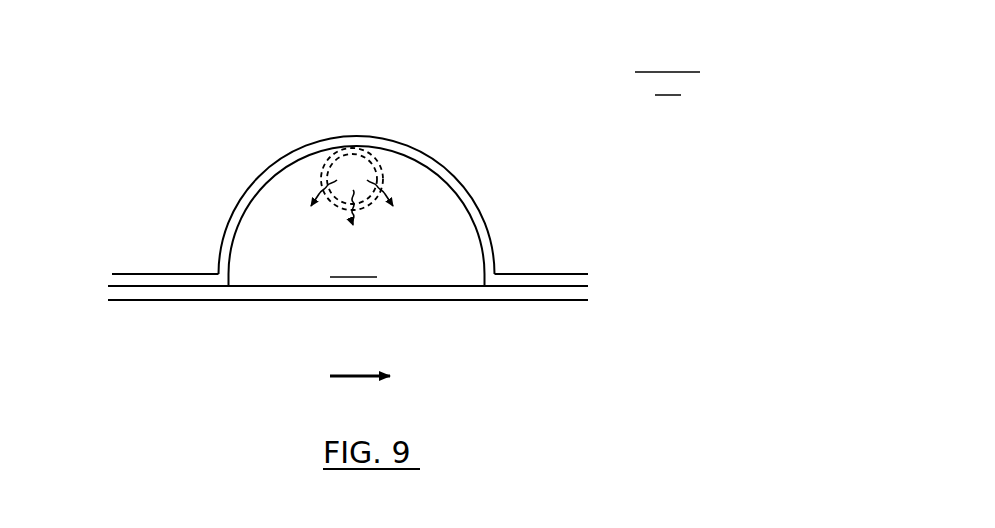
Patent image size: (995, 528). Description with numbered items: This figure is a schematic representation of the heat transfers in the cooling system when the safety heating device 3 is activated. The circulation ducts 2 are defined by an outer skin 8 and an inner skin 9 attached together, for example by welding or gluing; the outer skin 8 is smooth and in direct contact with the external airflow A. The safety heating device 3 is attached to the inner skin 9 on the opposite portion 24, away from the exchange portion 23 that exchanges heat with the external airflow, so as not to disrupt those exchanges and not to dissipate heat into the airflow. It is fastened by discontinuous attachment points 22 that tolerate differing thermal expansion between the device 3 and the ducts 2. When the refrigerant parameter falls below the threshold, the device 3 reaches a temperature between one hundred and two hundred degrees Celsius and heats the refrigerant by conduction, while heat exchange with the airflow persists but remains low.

The circulation ducts 2 is at (140, 100).
The safety heating device 3 is at (326, 158).
The attachment points 22 is at (350, 145).
The opposite portion 24 is at (416, 153).
The inner skin 9 is at (563, 274).
The exchange portion 23 is at (450, 302).
The outer skin 8 is at (545, 302).